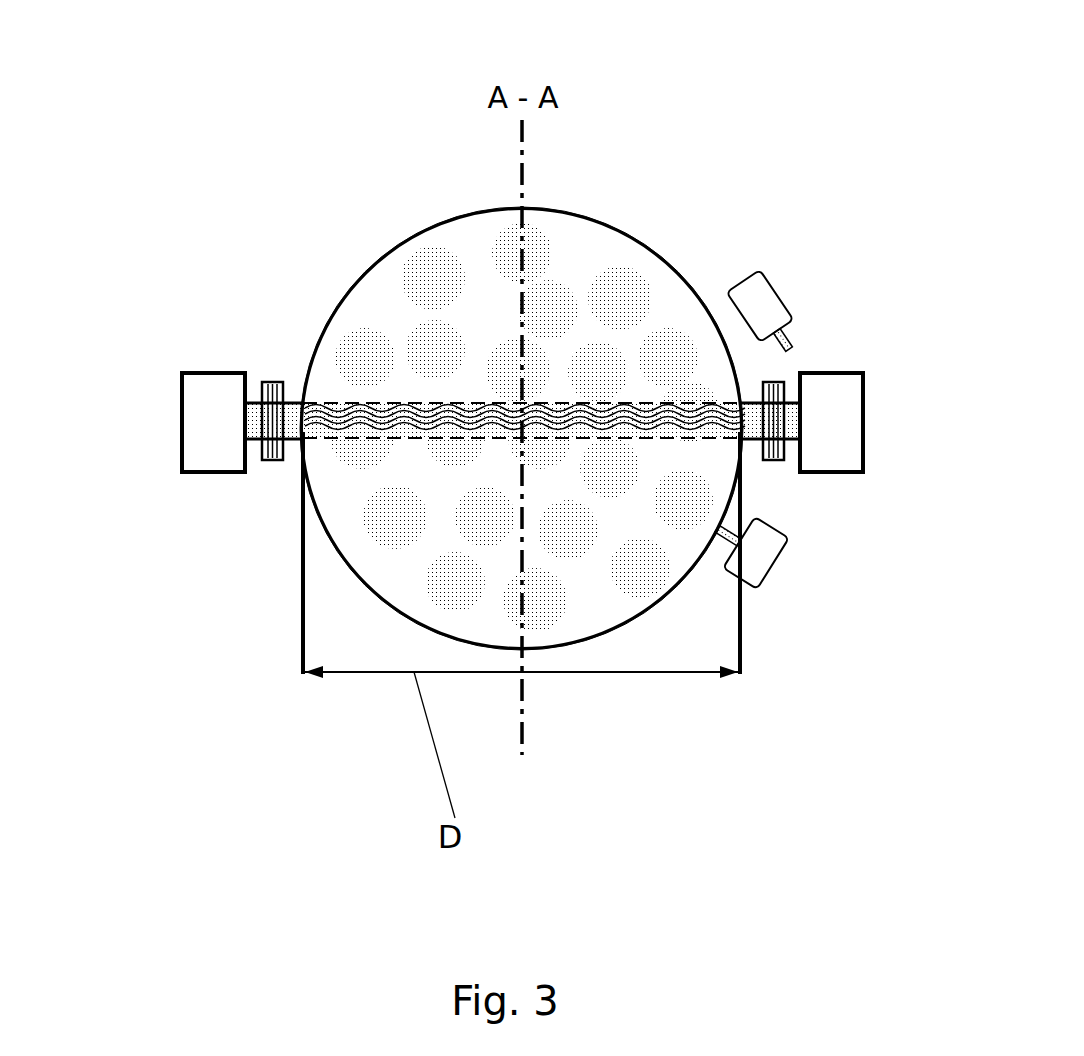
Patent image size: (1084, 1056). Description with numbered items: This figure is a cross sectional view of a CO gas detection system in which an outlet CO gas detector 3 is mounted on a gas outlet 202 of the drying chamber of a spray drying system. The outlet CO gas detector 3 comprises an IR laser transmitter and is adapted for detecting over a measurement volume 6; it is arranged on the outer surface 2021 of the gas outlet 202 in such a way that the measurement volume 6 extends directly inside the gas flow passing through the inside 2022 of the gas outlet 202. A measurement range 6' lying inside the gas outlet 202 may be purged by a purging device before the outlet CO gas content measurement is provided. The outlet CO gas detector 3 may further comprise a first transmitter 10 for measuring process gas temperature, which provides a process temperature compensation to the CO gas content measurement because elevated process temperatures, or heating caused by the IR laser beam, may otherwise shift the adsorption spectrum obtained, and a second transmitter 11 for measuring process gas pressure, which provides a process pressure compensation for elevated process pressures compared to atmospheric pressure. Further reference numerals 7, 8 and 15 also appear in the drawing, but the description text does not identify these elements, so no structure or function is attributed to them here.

The outlet CO gas detector 3 is at (835, 248).
The measurement volume 6 is at (490, 540).
The measurement range 6' is at (773, 343).
The transmitter unit QT 7 is at (850, 472).
The receiver unit QR 8 is at (210, 472).
The first transmitter 10 is at (773, 290).
The second transmitter 11 is at (742, 585).
The measuring light beam 15 is at (405, 405).
The gas outlet 202 is at (412, 235).
The outer surface 2021 is at (572, 212).
The inside 2022 is at (663, 303).